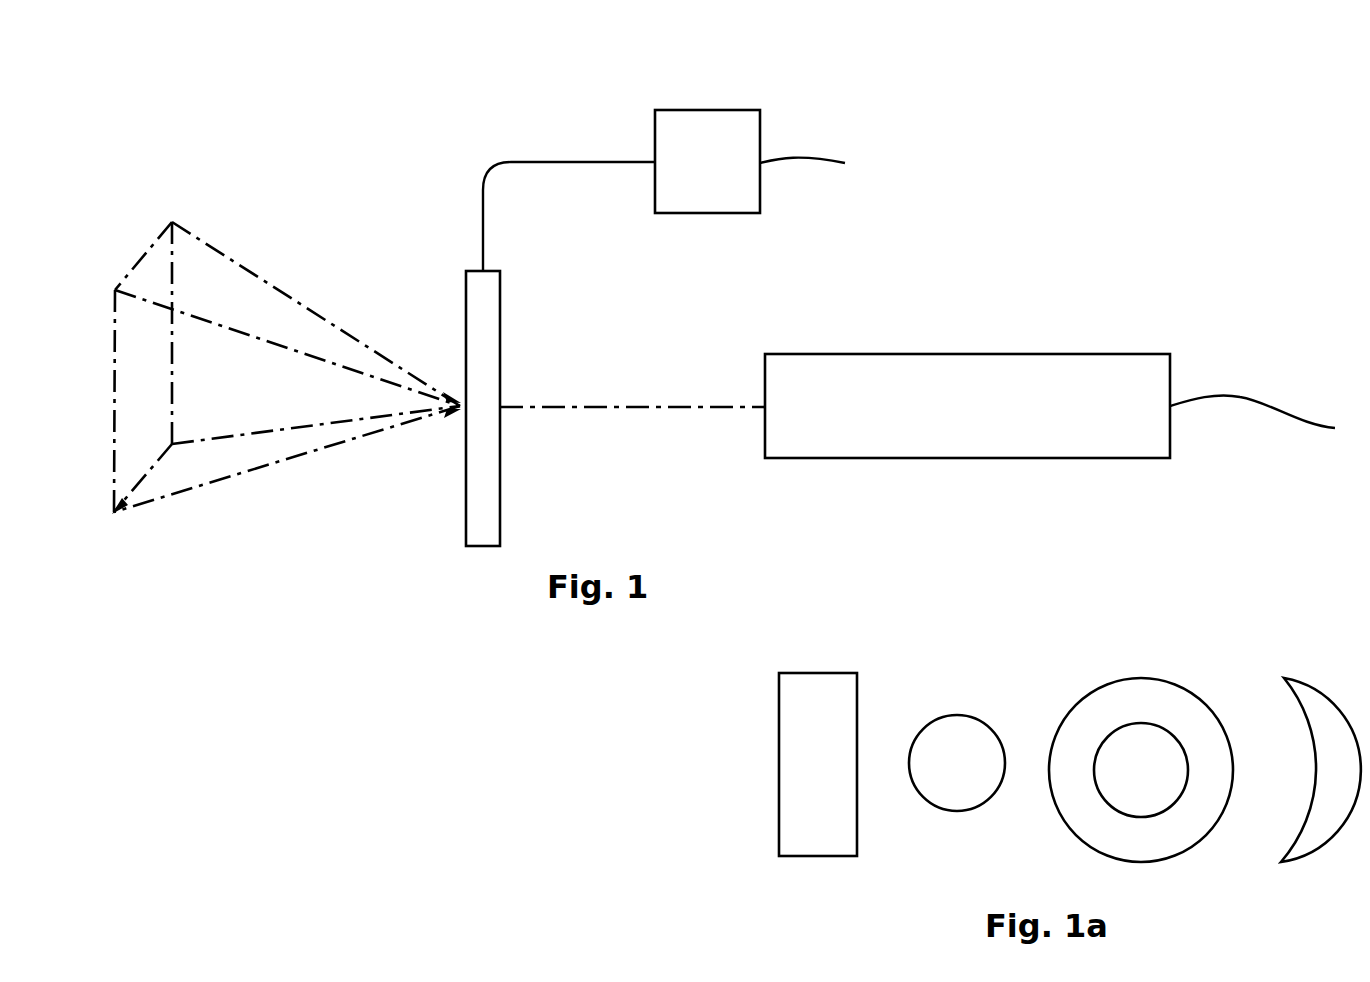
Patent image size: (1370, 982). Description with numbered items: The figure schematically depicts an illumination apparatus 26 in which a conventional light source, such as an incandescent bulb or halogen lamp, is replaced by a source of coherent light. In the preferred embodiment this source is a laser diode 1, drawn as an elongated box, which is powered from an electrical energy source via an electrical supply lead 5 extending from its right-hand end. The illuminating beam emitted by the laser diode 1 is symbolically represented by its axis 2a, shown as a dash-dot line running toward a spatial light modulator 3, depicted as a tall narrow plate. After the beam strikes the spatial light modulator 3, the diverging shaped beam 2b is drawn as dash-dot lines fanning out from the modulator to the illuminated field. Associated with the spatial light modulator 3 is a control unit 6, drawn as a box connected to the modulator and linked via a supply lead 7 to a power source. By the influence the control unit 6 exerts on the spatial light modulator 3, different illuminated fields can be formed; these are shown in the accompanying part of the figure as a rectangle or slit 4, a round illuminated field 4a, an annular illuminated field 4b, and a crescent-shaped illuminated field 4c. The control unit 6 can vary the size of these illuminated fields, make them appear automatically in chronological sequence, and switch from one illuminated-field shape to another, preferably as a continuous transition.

In FIG. 1, the laser diode 1 is at (965, 390).
In FIG. 1, the axis 2a is at (650, 407).
In FIG. 1, the shaped beam 2b is at (228, 464).
In FIG. 1, the spatial light modulator 3 is at (480, 299).
In FIG. 1, the rectangle (slit) 4 is at (150, 250).
In FIG. 1A, the rectangle (slit) 4 is at (826, 690).
In FIG. 1A, the round illuminated field 4a is at (958, 735).
In FIG. 1A, the annular illuminated field 4b is at (1148, 698).
In FIG. 1A, the crescent-shaped illuminated field 4c is at (1332, 718).
In FIG. 1, the electrical supply lead 5 is at (1248, 397).
In FIG. 1, the control unit 6 is at (665, 172).
In FIG. 1, the supply lead 7 is at (808, 155).
In FIG. 1, the illumination apparatus 26 is at (941, 188).